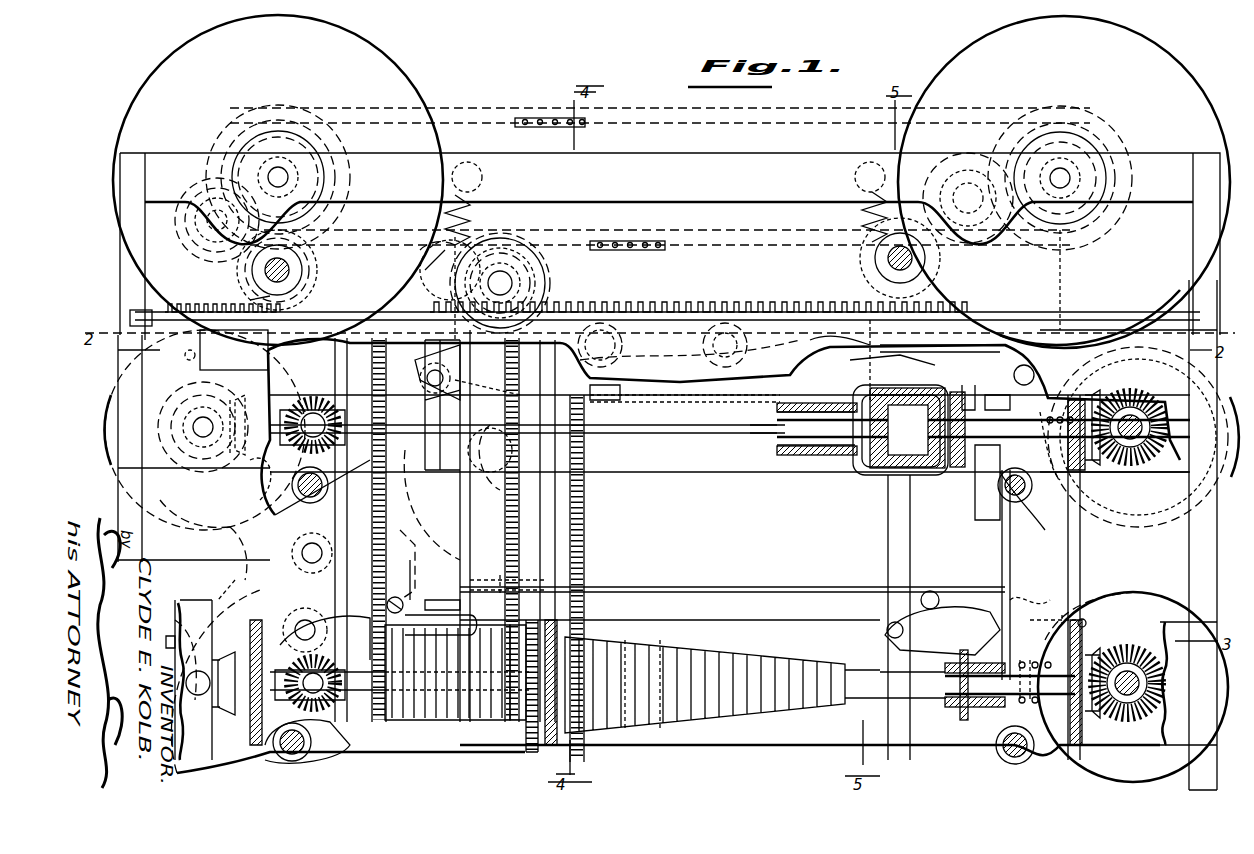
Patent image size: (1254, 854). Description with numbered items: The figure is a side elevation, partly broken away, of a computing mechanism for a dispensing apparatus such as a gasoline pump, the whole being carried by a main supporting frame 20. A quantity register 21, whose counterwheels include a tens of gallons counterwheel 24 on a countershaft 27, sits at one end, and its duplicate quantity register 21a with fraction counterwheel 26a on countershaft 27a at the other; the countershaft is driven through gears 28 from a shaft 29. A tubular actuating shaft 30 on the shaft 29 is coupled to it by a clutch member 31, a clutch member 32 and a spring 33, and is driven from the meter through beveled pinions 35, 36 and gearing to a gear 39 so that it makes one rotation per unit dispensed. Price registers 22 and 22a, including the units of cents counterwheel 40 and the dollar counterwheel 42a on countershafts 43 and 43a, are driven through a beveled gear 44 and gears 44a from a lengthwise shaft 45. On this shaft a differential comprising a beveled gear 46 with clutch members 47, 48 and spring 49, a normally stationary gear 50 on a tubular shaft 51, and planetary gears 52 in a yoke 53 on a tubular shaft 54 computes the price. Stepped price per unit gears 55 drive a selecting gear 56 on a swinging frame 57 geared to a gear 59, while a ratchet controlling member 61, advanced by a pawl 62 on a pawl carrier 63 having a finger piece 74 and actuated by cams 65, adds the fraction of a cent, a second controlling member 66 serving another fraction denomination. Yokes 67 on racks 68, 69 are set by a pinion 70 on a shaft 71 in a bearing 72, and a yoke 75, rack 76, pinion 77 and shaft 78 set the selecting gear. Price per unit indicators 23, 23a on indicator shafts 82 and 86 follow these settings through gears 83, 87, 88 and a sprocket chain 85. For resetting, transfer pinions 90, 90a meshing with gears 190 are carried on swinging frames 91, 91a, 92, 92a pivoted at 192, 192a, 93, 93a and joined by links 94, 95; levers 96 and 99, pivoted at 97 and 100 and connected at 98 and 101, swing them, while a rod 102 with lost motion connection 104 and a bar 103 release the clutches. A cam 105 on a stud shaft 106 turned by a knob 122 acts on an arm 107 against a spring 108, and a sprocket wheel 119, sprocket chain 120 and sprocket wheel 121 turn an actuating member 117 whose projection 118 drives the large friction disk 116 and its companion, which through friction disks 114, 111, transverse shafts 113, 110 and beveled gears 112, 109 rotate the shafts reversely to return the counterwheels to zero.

The main supporting frame 20 is at (670, 246).
The quantity register 21 is at (1140, 640).
The quantity register 21a is at (215, 595).
The computed price register 22 is at (1185, 525).
The computed price register 22a is at (150, 408).
The price per unit indicator 23 is at (1064, 182).
The price per unit indicator 23a is at (278, 180).
The counterwheel 24 is at (1091, 615).
The counterwheel 26a is at (234, 581).
The countershaft 27 is at (1127, 700).
The countershaft 27a is at (205, 738).
The gears 28 is at (1108, 660).
The shaft 29 is at (472, 735).
The actuating shaft 30 is at (440, 735).
The clutch member 31 is at (945, 710).
The clutch member 32 is at (965, 722).
The spring 33 is at (1040, 700).
The beveled pinion 35 is at (700, 645).
The beveled pinion 36 is at (625, 733).
The gear 39 is at (531, 752).
The units of cents counterwheel 40 is at (1100, 520).
The counterwheel 42a is at (185, 510).
The countershaft 43 is at (1130, 447).
The countershaft 43a is at (195, 430).
The beveled gear 44 is at (1110, 400).
The gears 44a is at (203, 438).
The shaft 45 is at (730, 428).
The beveled gear 46 is at (958, 465).
The clutch member 47 is at (958, 387).
The clutch member 48 is at (1001, 387).
The spring 49 is at (1056, 472).
The beveled gear 50 is at (860, 453).
The tubular shaft 51 is at (441, 405).
The planetary gears 52 is at (925, 470).
The yoke 53 is at (870, 485).
The tubular shaft 54 is at (780, 450).
The stepped gears 55 is at (790, 648).
The selecting gear 56 is at (590, 606).
The swinging frame 57 is at (595, 530).
The gear 59 is at (600, 395).
The controlling member 61 is at (512, 335).
The pawl 62 is at (402, 555).
The pawl carrier 63 is at (397, 585).
The cam 65 is at (443, 623).
The controlling member 66 is at (380, 335).
The yoke 67 is at (350, 335).
The toothed rack 68 is at (410, 268).
The toothed rack 69 is at (240, 308).
The pinion 70 is at (300, 297).
The shaft 71 is at (290, 272).
The bearing 72 is at (250, 270).
The finger piece 74 is at (383, 715).
The yoke 75 is at (675, 400).
The rack 76 is at (757, 305).
The pinion 77 is at (948, 270).
The shaft 78 is at (885, 262).
The indicator shaft 82 is at (1070, 165).
The gears 83 is at (1070, 220).
The sprocket chain 85 is at (580, 125).
The indicator shaft 86 is at (274, 170).
The gear 87 is at (236, 165).
The gear 88 is at (196, 200).
The transfer pinions 90 is at (1045, 345).
The transfer pinions 90a is at (226, 350).
The swinging frame 91 is at (942, 623).
The swinging frame 91a is at (370, 740).
The swinging frame 92 is at (990, 465).
The swinging frame 92a is at (322, 493).
The pivot 93 is at (1022, 501).
The pivot 93a is at (308, 549).
The link 94 is at (888, 552).
The link 95 is at (400, 567).
The lever 96 is at (835, 356).
The pivot 97 is at (720, 358).
The connection 98 is at (917, 357).
The lever 99 is at (450, 382).
The pivot 100 is at (616, 345).
The pivotal connection 101 is at (455, 375).
The rod 102 is at (735, 590).
The bar 103 is at (1020, 548).
The lost motion connection 104 is at (507, 576).
The cam 105 is at (500, 224).
The stud shaft 106 is at (500, 283).
The arm 107 is at (437, 270).
The spring 108 is at (445, 216).
The beveled gears 109 is at (350, 712).
The transverse shaft 110 is at (213, 689).
The friction disk 111 is at (280, 740).
The beveled gears 112 is at (330, 445).
The transverse shaft 113 is at (212, 400).
The friction disk 114 is at (240, 398).
The friction disk 116 is at (232, 553).
The actuating member 117 is at (590, 490).
The peripheral projection 118 is at (450, 505).
The sprocket wheel 119 is at (540, 283).
The sprocket chain 120 is at (487, 393).
The sprocket wheel 121 is at (485, 464).
The knob 122 is at (535, 235).
The gears 190 is at (1090, 317).
The pivot 192 is at (1000, 762).
The pivot 192a is at (305, 752).